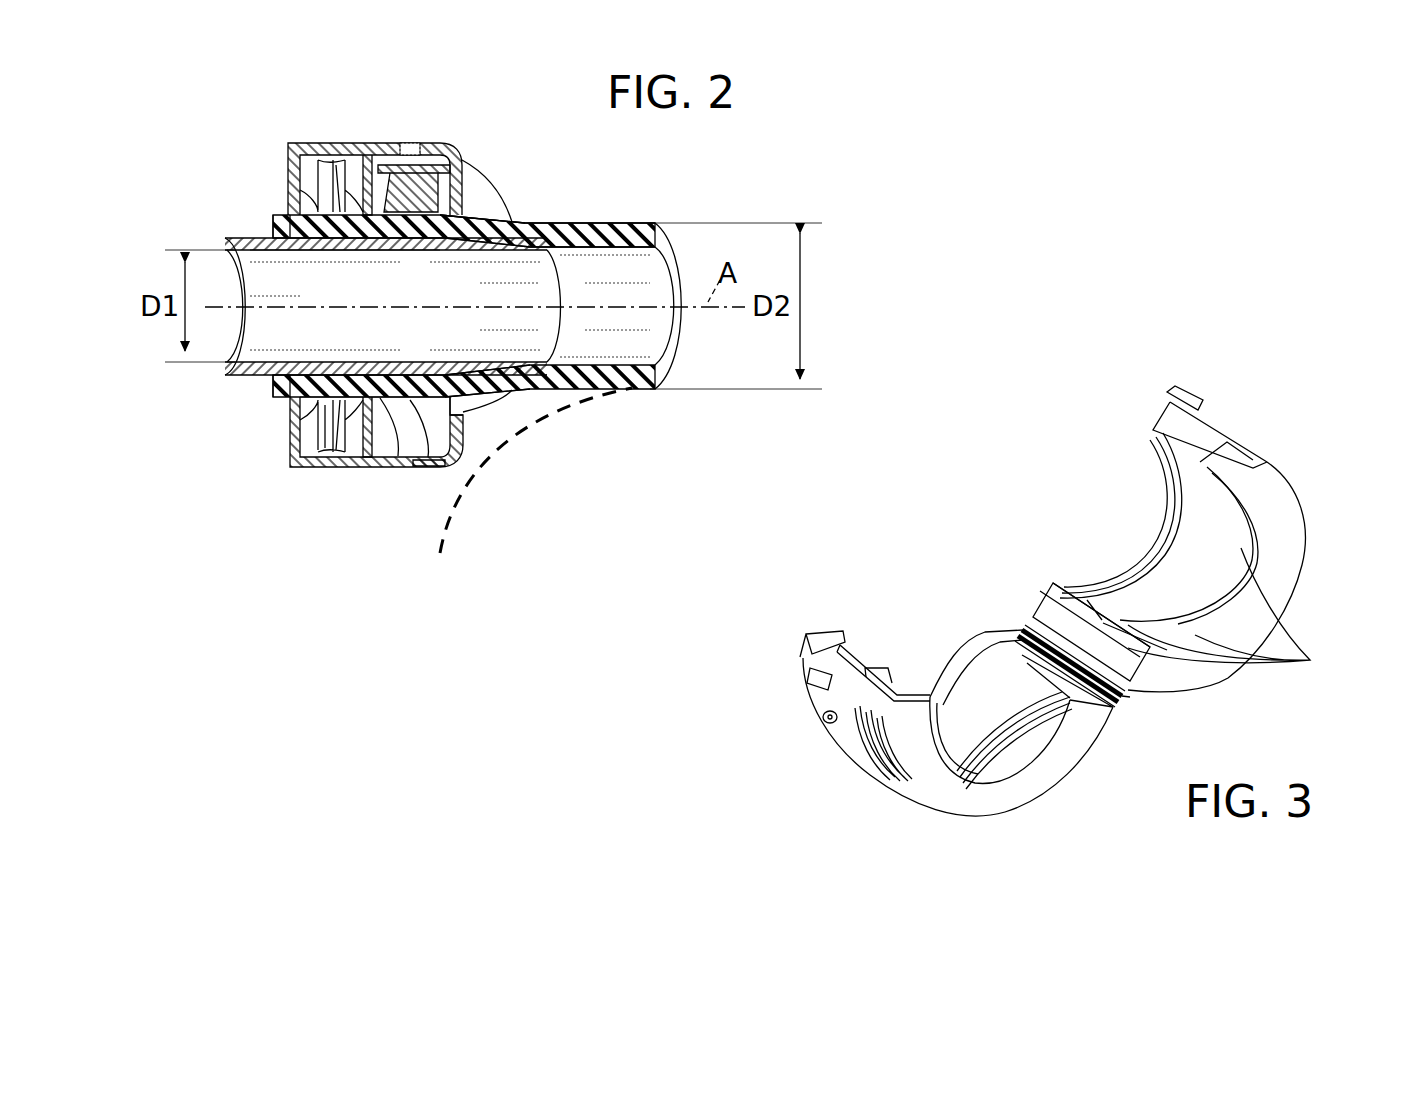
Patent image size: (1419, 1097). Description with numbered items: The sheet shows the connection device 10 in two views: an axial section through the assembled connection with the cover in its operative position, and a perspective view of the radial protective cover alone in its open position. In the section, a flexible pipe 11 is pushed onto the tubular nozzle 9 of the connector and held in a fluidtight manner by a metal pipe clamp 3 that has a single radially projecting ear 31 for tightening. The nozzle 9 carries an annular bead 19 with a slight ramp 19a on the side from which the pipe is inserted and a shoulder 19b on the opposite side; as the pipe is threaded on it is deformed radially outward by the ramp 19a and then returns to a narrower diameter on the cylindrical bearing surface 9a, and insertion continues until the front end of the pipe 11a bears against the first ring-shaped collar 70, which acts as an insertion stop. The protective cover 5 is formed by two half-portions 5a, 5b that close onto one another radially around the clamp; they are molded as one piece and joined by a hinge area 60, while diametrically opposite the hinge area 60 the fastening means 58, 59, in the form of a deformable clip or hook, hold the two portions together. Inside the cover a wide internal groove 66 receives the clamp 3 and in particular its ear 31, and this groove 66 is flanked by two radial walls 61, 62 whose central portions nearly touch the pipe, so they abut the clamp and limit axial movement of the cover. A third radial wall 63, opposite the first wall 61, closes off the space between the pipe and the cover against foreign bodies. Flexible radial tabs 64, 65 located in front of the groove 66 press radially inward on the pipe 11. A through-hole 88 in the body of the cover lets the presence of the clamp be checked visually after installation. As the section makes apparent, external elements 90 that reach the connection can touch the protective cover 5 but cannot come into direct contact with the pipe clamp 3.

In FIG. 2, the connection device 10 is at (467, 97).
In FIG. 2, the through-hole 88 is at (406, 145).
In FIG. 3, the through-hole 88 is at (828, 722).
In FIG. 2, the ear 31 is at (466, 160).
In FIG. 2, the flexible radial tab 64 is at (327, 180).
In FIG. 3, the flexible radial tab 64 is at (1027, 723).
In FIG. 2, the first ring-shaped collar 70 is at (275, 219).
In FIG. 2, the shoulder 19b is at (460, 212).
In FIG. 2, the ramp 19a is at (508, 243).
In FIG. 2, the flexible pipe 11 is at (614, 216).
In FIG. 2, the cylindrical bearing surface 9a is at (352, 246).
In FIG. 2, the annular bead 19 is at (480, 249).
In FIG. 2, the tubular nozzle 9 is at (358, 354).
In FIG. 2, the front end of the pipe 11a is at (274, 389).
In FIG. 2, the third radial wall 63 is at (309, 434).
In FIG. 3, the third radial wall 63 is at (1183, 670).
In FIG. 2, the flexible radial tab 65 is at (332, 444).
In FIG. 3, the flexible radial tab 65 is at (1190, 648).
In FIG. 2, the radial wall 62 is at (386, 432).
In FIG. 3, the radial wall 62 is at (1120, 620).
In FIG. 2, the internal groove 66 is at (416, 440).
In FIG. 3, the internal groove 66 is at (973, 717).
In FIG. 2, the pipe clamp 3 is at (428, 414).
In FIG. 2, the radial wall 61 is at (490, 425).
In FIG. 3, the radial wall 61 is at (1062, 603).
In FIG. 2, the protective cover 5 is at (486, 462).
In FIG. 3, the protective cover 5 is at (1100, 601).
In FIG. 2, the external elements 90 is at (596, 395).
In FIG. 3, the half-portion 5a is at (896, 800).
In FIG. 3, the half-portion 5b is at (1322, 518).
In FIG. 3, the fastening means 58 is at (805, 657).
In FIG. 3, the fastening means 59 is at (1188, 397).
In FIG. 3, the hinge area 60 is at (1112, 695).